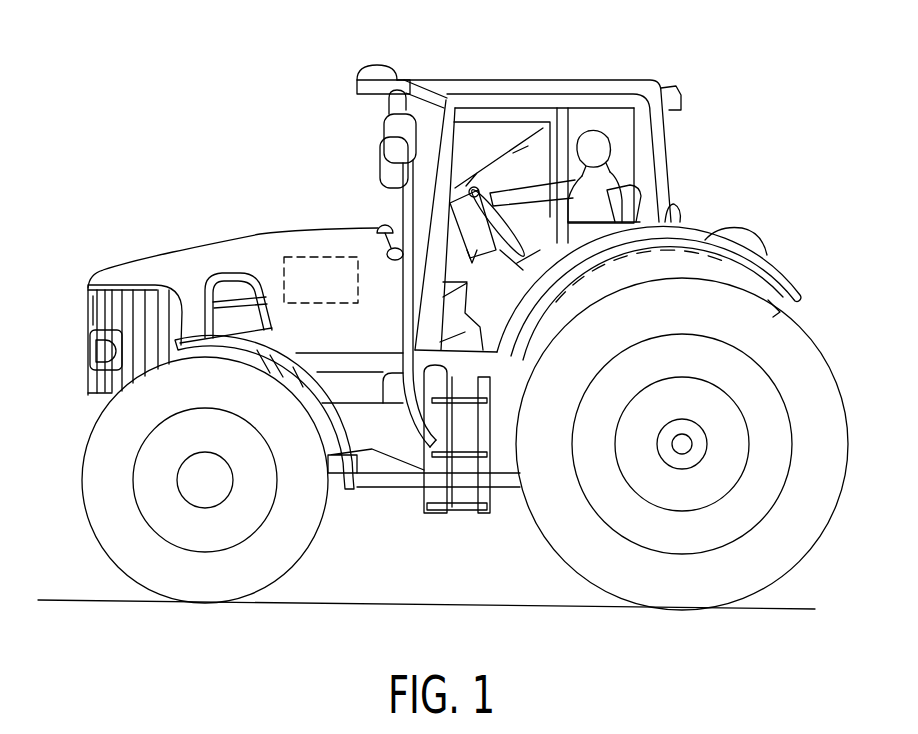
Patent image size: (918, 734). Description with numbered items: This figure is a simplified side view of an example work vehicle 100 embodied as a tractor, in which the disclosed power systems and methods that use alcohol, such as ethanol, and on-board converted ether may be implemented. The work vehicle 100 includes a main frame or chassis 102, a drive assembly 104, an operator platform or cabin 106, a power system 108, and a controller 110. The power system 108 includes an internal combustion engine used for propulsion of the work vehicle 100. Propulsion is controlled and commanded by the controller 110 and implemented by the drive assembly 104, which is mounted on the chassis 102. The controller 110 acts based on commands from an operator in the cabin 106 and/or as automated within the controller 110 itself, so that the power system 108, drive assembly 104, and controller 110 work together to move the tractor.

The work vehicle 100 is at (680, 63).
The chassis 102 is at (337, 483).
The drive assembly 104 is at (190, 482).
The cabin 106 is at (490, 96).
The power system 108 is at (195, 258).
The controller 110 is at (324, 258).